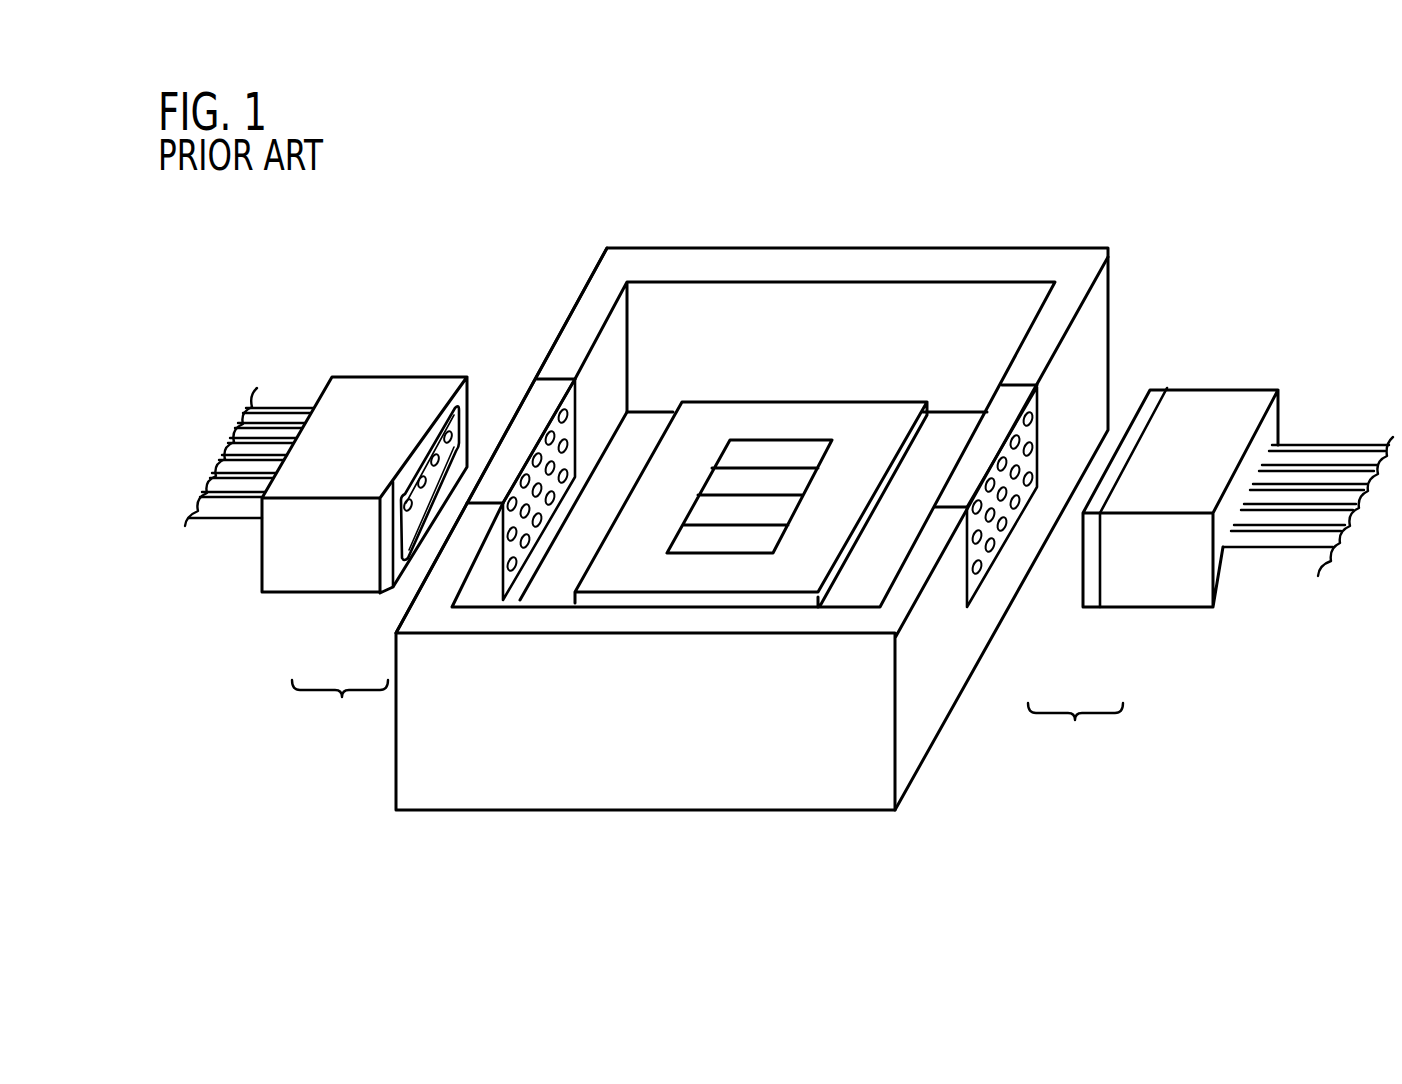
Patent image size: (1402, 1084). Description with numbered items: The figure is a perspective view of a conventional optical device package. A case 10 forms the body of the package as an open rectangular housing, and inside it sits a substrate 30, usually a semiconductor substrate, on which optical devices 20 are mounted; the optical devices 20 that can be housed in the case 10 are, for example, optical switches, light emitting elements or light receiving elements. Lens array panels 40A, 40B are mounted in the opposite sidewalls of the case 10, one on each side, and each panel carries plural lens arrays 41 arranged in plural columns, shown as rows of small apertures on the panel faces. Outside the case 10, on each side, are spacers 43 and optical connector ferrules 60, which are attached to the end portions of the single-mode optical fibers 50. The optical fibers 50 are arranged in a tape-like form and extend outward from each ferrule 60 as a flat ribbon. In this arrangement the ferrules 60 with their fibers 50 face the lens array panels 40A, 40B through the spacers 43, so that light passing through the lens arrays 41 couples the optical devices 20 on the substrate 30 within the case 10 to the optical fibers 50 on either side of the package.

The case 10 is at (822, 250).
The optical devices 20 is at (808, 450).
The substrate 30 is at (725, 408).
The lens arrays 41 is at (513, 563).
The spacers 43 is at (388, 578).
The single-mode optical fibers 50 is at (297, 417).
The optical connector ferrules 60 is at (393, 382).
The lens array panel 40A is at (1075, 730).
The lens array panel 40B is at (340, 709).